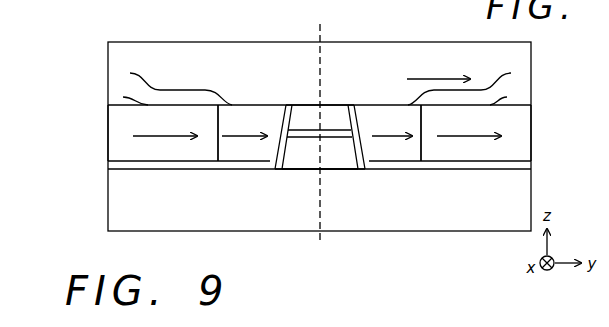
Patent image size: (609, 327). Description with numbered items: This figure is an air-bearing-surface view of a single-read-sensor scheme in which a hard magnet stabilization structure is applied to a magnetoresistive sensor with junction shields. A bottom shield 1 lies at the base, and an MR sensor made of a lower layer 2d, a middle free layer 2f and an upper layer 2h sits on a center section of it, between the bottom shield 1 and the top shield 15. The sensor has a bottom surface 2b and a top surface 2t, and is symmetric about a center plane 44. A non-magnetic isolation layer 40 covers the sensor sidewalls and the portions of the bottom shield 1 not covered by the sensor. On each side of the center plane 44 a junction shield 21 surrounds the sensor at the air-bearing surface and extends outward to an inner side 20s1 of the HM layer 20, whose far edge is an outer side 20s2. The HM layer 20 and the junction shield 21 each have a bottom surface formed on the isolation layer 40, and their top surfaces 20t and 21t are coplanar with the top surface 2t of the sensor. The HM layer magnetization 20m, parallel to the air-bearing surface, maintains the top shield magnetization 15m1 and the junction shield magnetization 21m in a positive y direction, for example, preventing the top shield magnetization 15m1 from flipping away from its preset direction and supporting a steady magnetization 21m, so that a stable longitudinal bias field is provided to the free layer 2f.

The bottom shield 1 is at (521, 191).
The top shield 15 is at (522, 57).
The isolation layer 40 is at (115, 164).
The HM layer 20 is at (115, 148).
The junction shield 21 is at (232, 152).
The upper layer 2h is at (303, 116).
The top surface 2t is at (337, 105).
The middle free layer 2f is at (308, 137).
The lower layer 2d is at (293, 160).
The bottom surface 2b is at (339, 170).
The center plane 44 is at (319, 143).
The top surface of junction shield 21t is at (130, 73).
The top surface of HM layer 20t is at (123, 97).
The outer side 20s2 is at (107, 131).
The inner side 20s1 is at (215, 148).
The top shield magnetization 15m1 is at (438, 70).
The HM layer magnetization 20m is at (317, 127).
The junction shield magnetization 21m is at (315, 127).